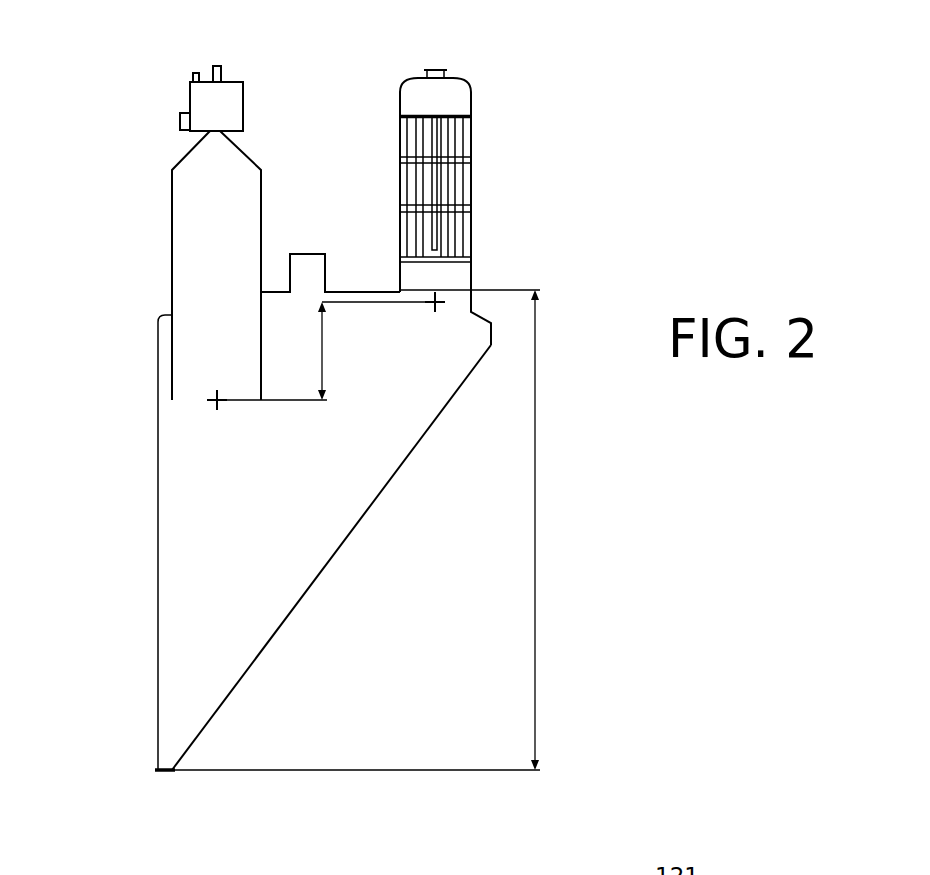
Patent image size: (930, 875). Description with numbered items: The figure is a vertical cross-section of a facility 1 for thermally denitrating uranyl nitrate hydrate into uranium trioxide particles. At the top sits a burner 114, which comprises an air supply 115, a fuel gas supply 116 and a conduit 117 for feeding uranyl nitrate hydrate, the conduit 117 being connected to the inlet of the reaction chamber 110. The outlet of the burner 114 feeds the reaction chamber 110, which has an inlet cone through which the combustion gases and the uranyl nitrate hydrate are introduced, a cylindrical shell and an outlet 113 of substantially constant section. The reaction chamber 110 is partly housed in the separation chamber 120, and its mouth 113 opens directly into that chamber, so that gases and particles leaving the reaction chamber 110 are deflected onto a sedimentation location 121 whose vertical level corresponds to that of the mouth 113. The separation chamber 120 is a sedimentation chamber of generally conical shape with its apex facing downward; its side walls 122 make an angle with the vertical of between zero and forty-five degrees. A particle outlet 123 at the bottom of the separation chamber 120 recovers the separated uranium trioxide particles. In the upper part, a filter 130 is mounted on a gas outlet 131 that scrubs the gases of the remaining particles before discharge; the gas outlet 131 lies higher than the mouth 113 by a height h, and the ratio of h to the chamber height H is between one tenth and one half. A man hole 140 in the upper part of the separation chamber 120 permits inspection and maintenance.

The facility 1 is at (136, 61).
The reaction chamber 110 is at (187, 228).
The outlet of the reaction chamber 113 is at (193, 400).
The burner 114 is at (233, 110).
The air supply 115 is at (166, 121).
The fuel gas supply 116 is at (196, 60).
The conduit for feeding uranyl nitrate hydrate 117 is at (216, 52).
The separation chamber 120 is at (185, 560).
The sedimentation location 121 is at (212, 407).
The side walls 122 is at (307, 583).
The particle outlet 123 is at (160, 775).
The filter 130 is at (458, 182).
The gas outlet 131 is at (430, 307).
The man hole 140 is at (302, 263).